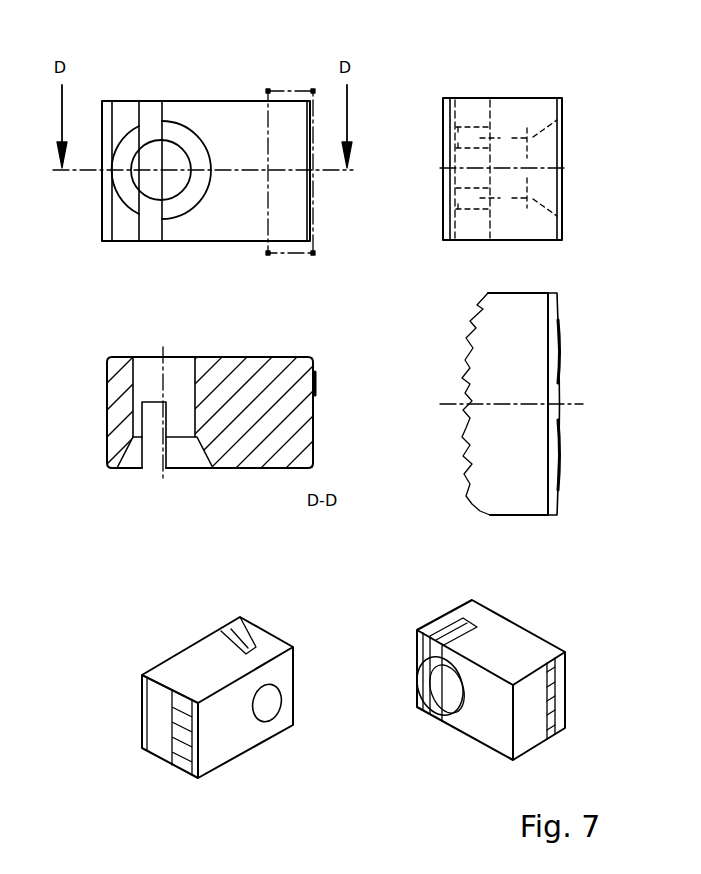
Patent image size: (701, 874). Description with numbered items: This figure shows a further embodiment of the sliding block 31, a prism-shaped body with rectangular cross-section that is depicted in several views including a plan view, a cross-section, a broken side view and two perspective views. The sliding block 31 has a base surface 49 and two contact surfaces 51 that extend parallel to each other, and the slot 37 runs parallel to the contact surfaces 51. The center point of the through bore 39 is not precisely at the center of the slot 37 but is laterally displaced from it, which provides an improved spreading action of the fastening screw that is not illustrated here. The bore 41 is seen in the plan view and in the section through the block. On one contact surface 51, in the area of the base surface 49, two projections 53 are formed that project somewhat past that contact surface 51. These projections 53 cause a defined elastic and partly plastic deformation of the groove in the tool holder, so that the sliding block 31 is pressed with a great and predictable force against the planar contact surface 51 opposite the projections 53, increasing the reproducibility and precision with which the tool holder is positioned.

The sliding block 31 is at (218, 223).
The slot 37 is at (141, 114).
The through bore 39 is at (183, 152).
The counterbore 41 is at (177, 208).
The base surface 49 is at (245, 367).
The contact surface 51 is at (104, 216).
The projection 53 is at (316, 383).